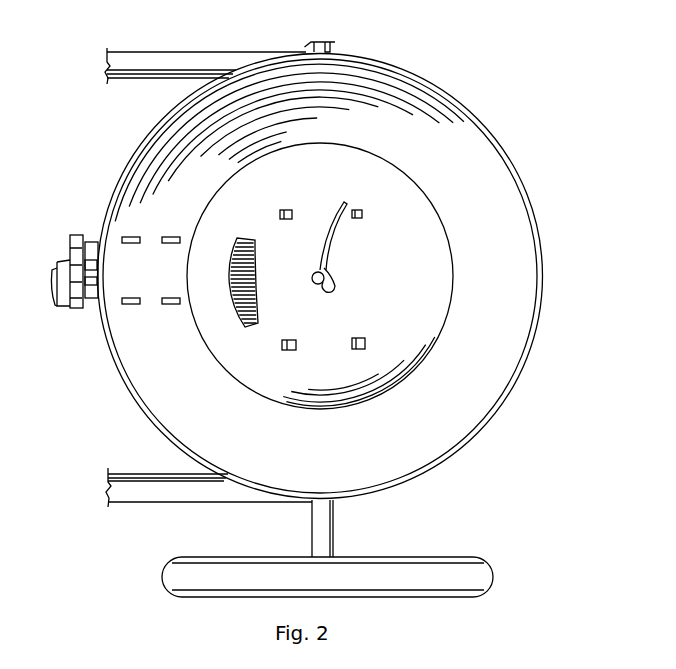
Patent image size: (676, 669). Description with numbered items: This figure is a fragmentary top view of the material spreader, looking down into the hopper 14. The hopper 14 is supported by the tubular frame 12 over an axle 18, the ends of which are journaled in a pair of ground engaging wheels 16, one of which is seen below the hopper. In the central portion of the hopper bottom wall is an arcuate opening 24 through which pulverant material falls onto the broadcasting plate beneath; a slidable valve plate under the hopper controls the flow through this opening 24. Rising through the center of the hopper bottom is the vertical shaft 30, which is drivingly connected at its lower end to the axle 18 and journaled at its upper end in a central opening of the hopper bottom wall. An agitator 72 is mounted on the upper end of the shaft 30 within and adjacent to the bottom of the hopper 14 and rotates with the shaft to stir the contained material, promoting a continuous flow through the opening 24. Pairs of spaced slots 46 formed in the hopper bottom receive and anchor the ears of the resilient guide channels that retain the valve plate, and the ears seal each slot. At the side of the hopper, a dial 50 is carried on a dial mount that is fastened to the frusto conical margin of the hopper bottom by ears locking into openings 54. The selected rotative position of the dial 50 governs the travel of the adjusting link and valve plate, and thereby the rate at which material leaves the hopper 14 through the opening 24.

The tubular frame 12 is at (157, 52).
The hopper 14 is at (533, 296).
The ground engaging wheels 16 is at (486, 575).
The axle 18 is at (333, 540).
The arcuate opening 24 is at (254, 283).
The vertical shaft 30 is at (314, 281).
The slots 46 is at (286, 209).
The dial 50 is at (80, 242).
The openings 54 is at (172, 304).
The agitator 72 is at (329, 241).